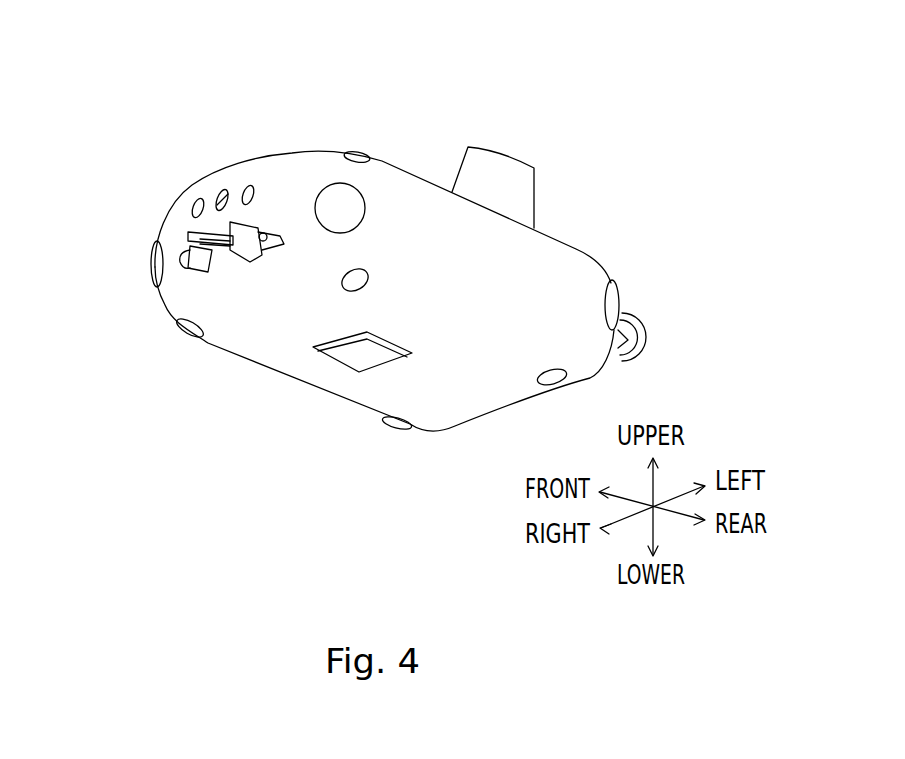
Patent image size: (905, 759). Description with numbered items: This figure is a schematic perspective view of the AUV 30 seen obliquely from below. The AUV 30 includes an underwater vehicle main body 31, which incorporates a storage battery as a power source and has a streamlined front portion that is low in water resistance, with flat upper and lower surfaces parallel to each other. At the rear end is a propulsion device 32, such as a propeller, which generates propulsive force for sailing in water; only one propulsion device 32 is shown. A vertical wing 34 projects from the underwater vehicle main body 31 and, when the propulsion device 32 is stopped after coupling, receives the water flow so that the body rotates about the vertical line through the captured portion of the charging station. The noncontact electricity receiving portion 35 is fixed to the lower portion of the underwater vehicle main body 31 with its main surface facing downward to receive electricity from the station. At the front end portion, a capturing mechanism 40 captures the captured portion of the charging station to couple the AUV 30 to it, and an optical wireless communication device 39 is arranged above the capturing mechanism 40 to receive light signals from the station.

The AUV 30 is at (646, 191).
The underwater vehicle main body 31 is at (286, 154).
The propulsion device 32 is at (645, 333).
The vertical wing 34 is at (508, 148).
The noncontact electricity receiving portion 35 is at (333, 362).
The optical wireless communication device 39 is at (215, 192).
The capturing mechanism 40 is at (197, 273).